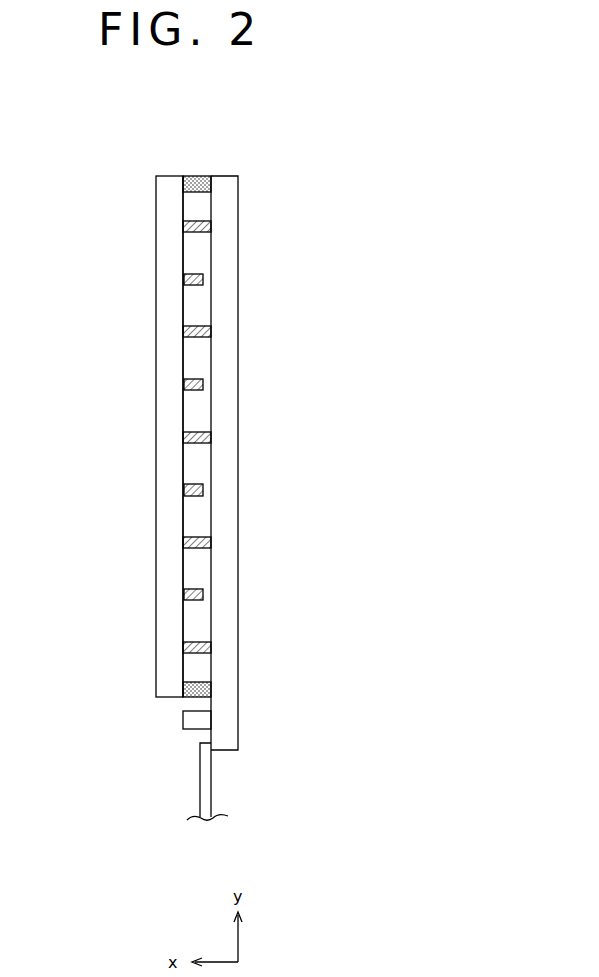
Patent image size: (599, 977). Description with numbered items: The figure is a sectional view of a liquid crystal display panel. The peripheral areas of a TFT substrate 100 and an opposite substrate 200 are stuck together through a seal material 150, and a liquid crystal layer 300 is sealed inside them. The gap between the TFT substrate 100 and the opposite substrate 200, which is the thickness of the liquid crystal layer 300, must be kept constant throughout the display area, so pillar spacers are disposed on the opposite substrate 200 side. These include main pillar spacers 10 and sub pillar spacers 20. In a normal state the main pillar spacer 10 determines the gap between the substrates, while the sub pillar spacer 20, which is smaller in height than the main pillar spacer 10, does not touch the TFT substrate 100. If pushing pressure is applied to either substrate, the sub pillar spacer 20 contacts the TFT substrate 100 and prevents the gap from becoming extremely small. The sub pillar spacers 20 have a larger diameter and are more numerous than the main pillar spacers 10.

The TFT substrate 100 is at (240, 182).
The opposite substrate 200 is at (157, 182).
The liquid crystal layer 300 is at (190, 308).
The seal material 150 is at (197, 177).
The main pillar spacer 10 is at (203, 434).
The sub pillar spacer 20 is at (198, 380).